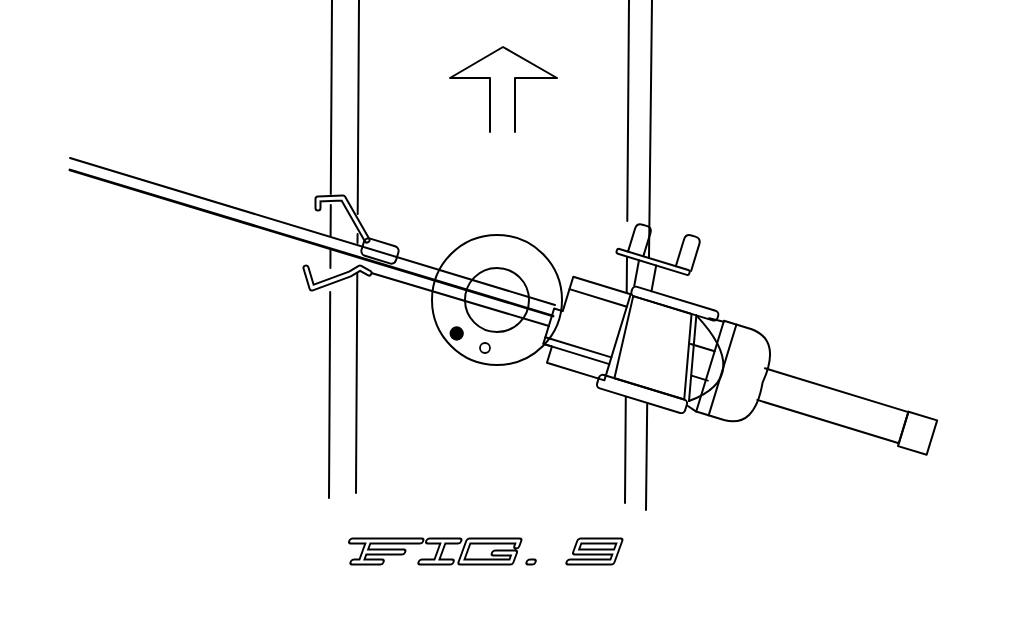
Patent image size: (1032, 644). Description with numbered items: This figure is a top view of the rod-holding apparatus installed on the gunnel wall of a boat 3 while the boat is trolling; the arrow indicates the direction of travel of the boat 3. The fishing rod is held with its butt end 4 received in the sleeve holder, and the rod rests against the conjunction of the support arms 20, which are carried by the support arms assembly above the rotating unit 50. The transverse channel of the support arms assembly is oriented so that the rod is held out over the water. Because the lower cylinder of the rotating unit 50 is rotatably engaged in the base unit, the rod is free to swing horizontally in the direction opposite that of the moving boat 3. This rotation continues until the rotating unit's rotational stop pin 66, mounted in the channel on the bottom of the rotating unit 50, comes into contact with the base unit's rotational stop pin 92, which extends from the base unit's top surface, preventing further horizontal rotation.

The boat 3 is at (607, 110).
The butt end 4 is at (888, 400).
The support arms 20 is at (363, 236).
The rotating unit 50 is at (508, 242).
The rotational stop pin 66 is at (448, 337).
The rotational stop pin 92 is at (480, 357).